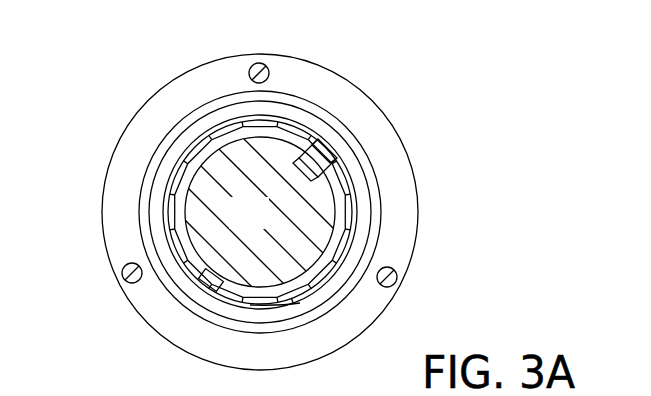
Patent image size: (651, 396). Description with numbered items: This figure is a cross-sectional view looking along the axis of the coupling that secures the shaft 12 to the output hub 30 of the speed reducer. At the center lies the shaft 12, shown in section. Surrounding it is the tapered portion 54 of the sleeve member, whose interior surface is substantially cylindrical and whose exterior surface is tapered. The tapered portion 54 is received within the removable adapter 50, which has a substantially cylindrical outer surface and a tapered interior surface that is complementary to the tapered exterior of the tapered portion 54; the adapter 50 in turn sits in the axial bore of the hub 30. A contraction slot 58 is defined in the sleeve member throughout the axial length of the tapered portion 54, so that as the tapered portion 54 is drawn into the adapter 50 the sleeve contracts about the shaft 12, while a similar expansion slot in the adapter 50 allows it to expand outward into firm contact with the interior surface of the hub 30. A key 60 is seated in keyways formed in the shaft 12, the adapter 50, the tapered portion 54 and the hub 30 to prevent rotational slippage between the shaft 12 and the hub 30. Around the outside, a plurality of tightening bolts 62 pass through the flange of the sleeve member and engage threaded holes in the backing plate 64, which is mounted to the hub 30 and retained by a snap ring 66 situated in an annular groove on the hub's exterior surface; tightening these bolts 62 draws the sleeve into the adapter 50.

The shaft 12 is at (263, 226).
The output hub 30 is at (172, 157).
The removable adapter 50 is at (163, 200).
The tapered portion 54 is at (283, 290).
The contraction slot 58 is at (212, 290).
The key 60 is at (333, 160).
The tightening bolts 62 is at (263, 68).
The backing plate 64 is at (400, 188).
The snap ring 66 is at (343, 293).